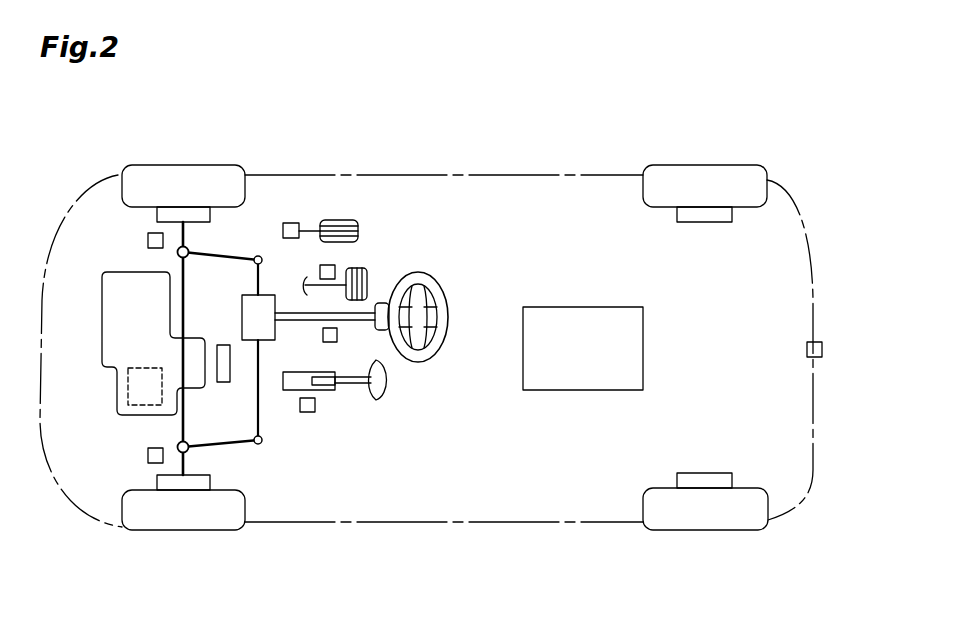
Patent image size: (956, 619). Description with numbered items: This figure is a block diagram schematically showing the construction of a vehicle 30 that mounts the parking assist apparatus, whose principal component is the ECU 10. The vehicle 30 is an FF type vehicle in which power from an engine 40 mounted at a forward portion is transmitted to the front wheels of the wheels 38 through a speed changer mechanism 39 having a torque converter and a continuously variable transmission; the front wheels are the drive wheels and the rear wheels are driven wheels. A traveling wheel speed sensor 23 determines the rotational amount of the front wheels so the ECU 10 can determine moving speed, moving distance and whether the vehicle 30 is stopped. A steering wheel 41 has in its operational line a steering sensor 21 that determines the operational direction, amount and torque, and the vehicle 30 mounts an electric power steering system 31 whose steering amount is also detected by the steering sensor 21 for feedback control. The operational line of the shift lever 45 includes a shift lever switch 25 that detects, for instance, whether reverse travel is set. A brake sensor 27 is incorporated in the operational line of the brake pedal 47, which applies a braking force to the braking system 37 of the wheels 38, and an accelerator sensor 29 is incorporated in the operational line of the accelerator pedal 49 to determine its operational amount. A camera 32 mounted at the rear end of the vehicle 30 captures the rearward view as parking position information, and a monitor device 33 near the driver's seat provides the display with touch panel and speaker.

The ECU 10 is at (560, 390).
The steering sensor 21 is at (330, 343).
The traveling wheel speed sensor 23 is at (148, 241).
The shift lever switch 25 is at (315, 405).
The brake sensor 27 is at (320, 266).
The accelerator sensor 29 is at (292, 223).
The vehicle 30 is at (103, 168).
The power steering system 31 is at (242, 322).
The camera 32 is at (807, 349).
The monitor device 33 is at (223, 382).
The braking system 37 is at (157, 218).
The wheels 38 is at (198, 165).
The speed changer mechanism 39 is at (128, 388).
The engine 40 is at (102, 352).
The steering wheel 41 is at (448, 310).
The shift lever 45 is at (388, 382).
The brake pedal 47 is at (368, 278).
The accelerator pedal 49 is at (358, 232).